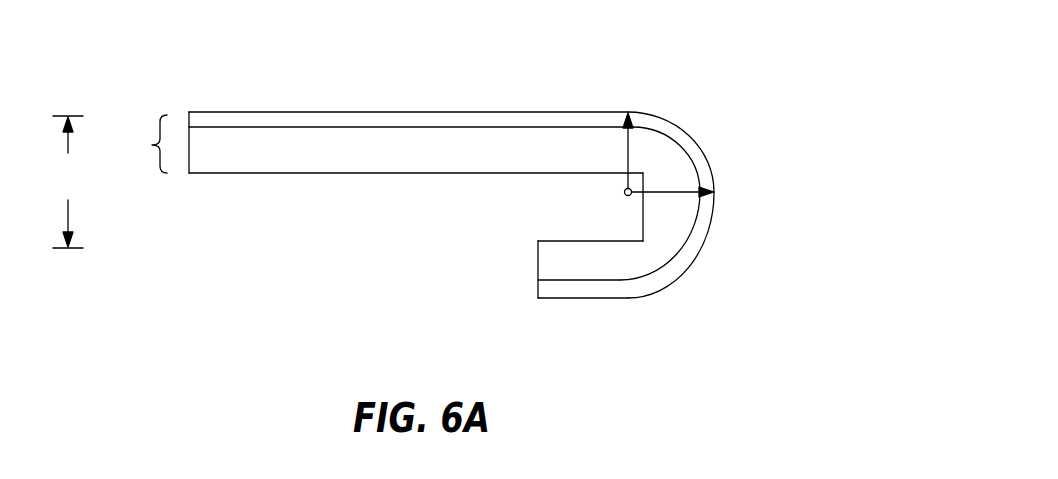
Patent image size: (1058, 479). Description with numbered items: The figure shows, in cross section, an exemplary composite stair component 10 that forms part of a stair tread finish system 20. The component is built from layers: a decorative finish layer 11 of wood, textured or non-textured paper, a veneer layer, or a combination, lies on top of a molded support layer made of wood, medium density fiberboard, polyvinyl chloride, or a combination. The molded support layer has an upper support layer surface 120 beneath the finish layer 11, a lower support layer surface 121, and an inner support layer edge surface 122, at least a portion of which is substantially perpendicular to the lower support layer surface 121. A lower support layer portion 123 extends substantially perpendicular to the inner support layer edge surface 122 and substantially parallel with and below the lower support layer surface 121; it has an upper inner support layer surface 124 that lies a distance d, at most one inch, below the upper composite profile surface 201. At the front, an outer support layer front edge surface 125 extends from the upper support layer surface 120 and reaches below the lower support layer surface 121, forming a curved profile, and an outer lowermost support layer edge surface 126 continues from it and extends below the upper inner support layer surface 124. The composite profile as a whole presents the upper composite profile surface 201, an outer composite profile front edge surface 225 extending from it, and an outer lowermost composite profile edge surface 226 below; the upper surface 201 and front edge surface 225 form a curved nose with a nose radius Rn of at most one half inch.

The stair tread finish system 20 is at (722, 63).
The composite stair component 10 is at (154, 142).
The finish layer 11 is at (332, 120).
The upper support layer surface 120 is at (432, 127).
The lower support layer surface 121 is at (418, 173).
The inner support layer edge surface 122 is at (641, 207).
The lower support layer portion 123 is at (587, 263).
The upper inner support layer surface 124 is at (572, 240).
The outer support layer front edge surface 125 is at (712, 220).
The outer lowermost support layer edge surface 126 is at (573, 282).
The upper composite profile surface 201 is at (558, 107).
The outer composite profile front edge surface 225 is at (716, 201).
The outer lowermost composite profile edge surface 226 is at (600, 299).
The nose radius Rn is at (672, 213).
The distance d is at (68, 182).